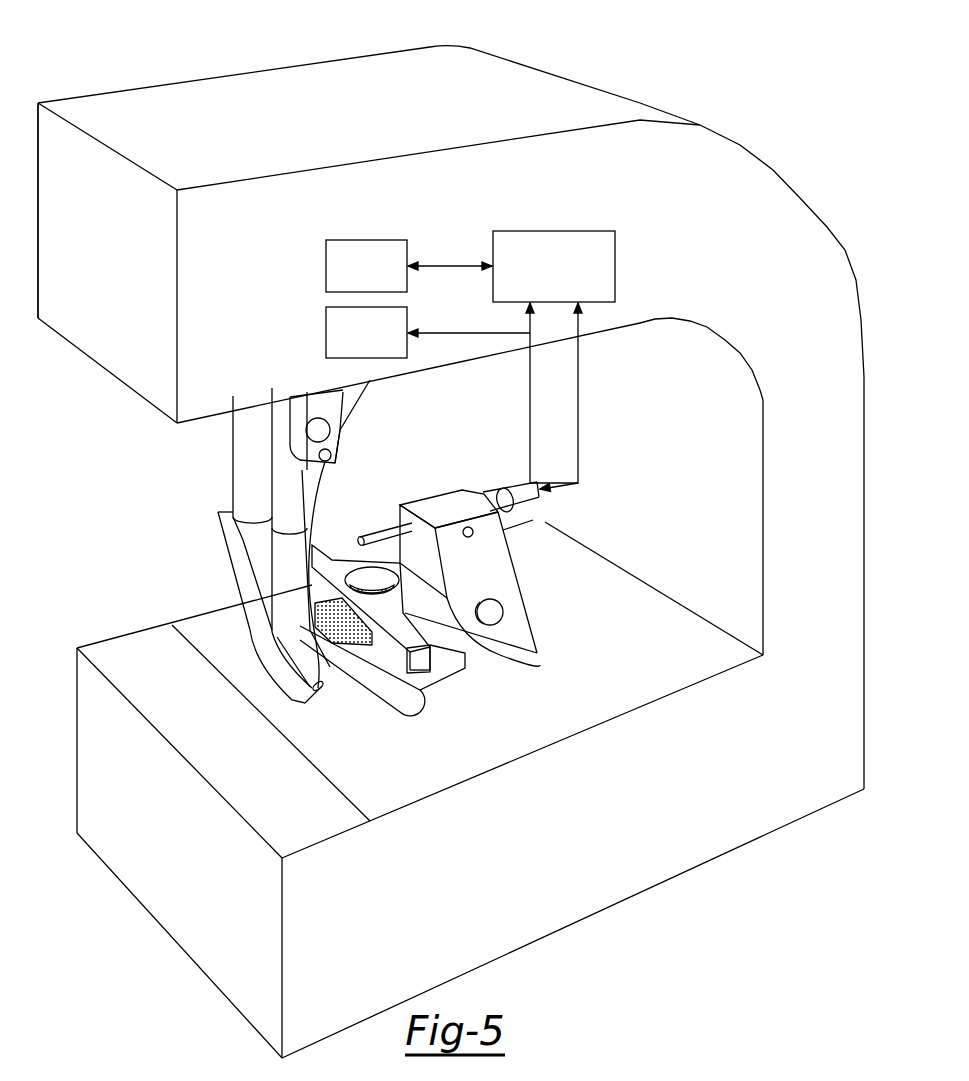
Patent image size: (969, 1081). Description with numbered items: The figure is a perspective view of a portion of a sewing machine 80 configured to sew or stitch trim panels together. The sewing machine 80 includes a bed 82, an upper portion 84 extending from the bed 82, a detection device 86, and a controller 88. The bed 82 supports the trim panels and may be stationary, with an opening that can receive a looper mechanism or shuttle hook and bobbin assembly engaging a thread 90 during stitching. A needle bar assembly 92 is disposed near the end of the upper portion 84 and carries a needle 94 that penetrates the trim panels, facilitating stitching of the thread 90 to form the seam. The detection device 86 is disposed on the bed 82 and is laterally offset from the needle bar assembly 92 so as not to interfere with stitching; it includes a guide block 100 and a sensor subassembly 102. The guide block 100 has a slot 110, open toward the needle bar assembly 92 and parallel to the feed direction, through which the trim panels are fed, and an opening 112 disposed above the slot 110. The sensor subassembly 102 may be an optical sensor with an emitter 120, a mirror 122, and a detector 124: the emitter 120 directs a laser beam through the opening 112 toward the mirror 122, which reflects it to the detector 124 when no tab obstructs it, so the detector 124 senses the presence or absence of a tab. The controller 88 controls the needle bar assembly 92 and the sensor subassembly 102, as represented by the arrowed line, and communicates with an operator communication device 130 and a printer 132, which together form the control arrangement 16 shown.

The sewing machine 80 is at (214, 99).
The control system 16 is at (447, 335).
The operator communication device 130 is at (366, 266).
The controller 88 is at (554, 266).
The printer 132 is at (366, 332).
The upper portion 84 is at (229, 376).
The bed 82 is at (498, 724).
The thread 90 is at (355, 407).
The needle bar assembly 92 is at (288, 423).
The needle 94 is at (300, 485).
The detection device 86 is at (439, 495).
The guide block 100 is at (498, 567).
The sensor subassembly 102 is at (520, 498).
The detector 124 is at (367, 545).
The emitter 120 is at (383, 542).
The opening 112 is at (540, 665).
The mirror 122 is at (344, 622).
The slot 110 is at (382, 685).